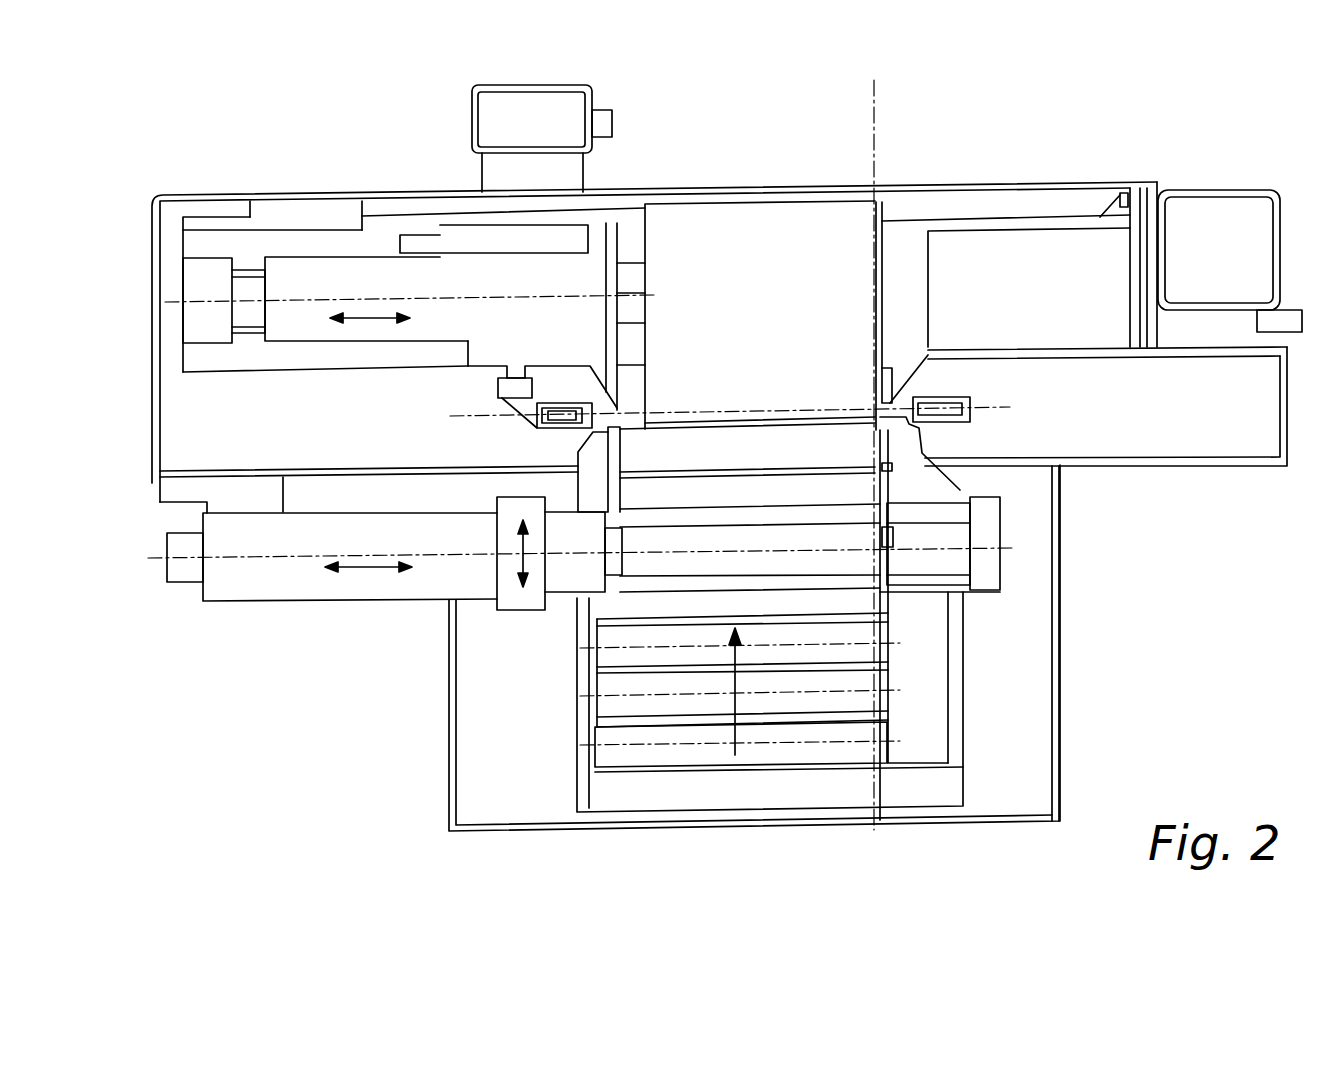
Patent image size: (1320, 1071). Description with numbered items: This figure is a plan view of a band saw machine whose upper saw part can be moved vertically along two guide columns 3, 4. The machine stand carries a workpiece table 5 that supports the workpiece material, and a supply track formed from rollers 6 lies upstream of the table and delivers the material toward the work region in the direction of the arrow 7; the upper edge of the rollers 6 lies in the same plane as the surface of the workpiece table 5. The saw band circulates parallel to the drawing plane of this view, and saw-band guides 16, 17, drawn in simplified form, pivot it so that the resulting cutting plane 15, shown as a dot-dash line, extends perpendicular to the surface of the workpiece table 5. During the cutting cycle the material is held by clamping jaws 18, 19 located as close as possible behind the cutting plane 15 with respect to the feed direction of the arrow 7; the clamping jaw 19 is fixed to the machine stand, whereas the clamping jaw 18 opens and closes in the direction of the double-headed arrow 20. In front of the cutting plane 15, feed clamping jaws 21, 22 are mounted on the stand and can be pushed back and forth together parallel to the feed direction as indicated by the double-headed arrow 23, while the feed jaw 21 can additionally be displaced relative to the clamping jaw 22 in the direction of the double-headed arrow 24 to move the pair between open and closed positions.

The guide column 3 is at (541, 108).
The guide column 4 is at (1205, 230).
The workpiece table 5 is at (747, 240).
The rollers 6 is at (858, 678).
The arrow 7 is at (737, 700).
The cutting plane 15 is at (422, 417).
The saw-band guide 16 is at (560, 410).
The saw-band guide 17 is at (940, 408).
The clamping jaw 18 is at (577, 275).
The clamping jaw 19 is at (897, 263).
The double-headed arrow 20 is at (372, 315).
The feed clamping jaw 21 is at (617, 462).
The feed clamping jaw 22 is at (892, 467).
The double-headed arrow 23 is at (518, 568).
The double-headed arrow 24 is at (367, 570).